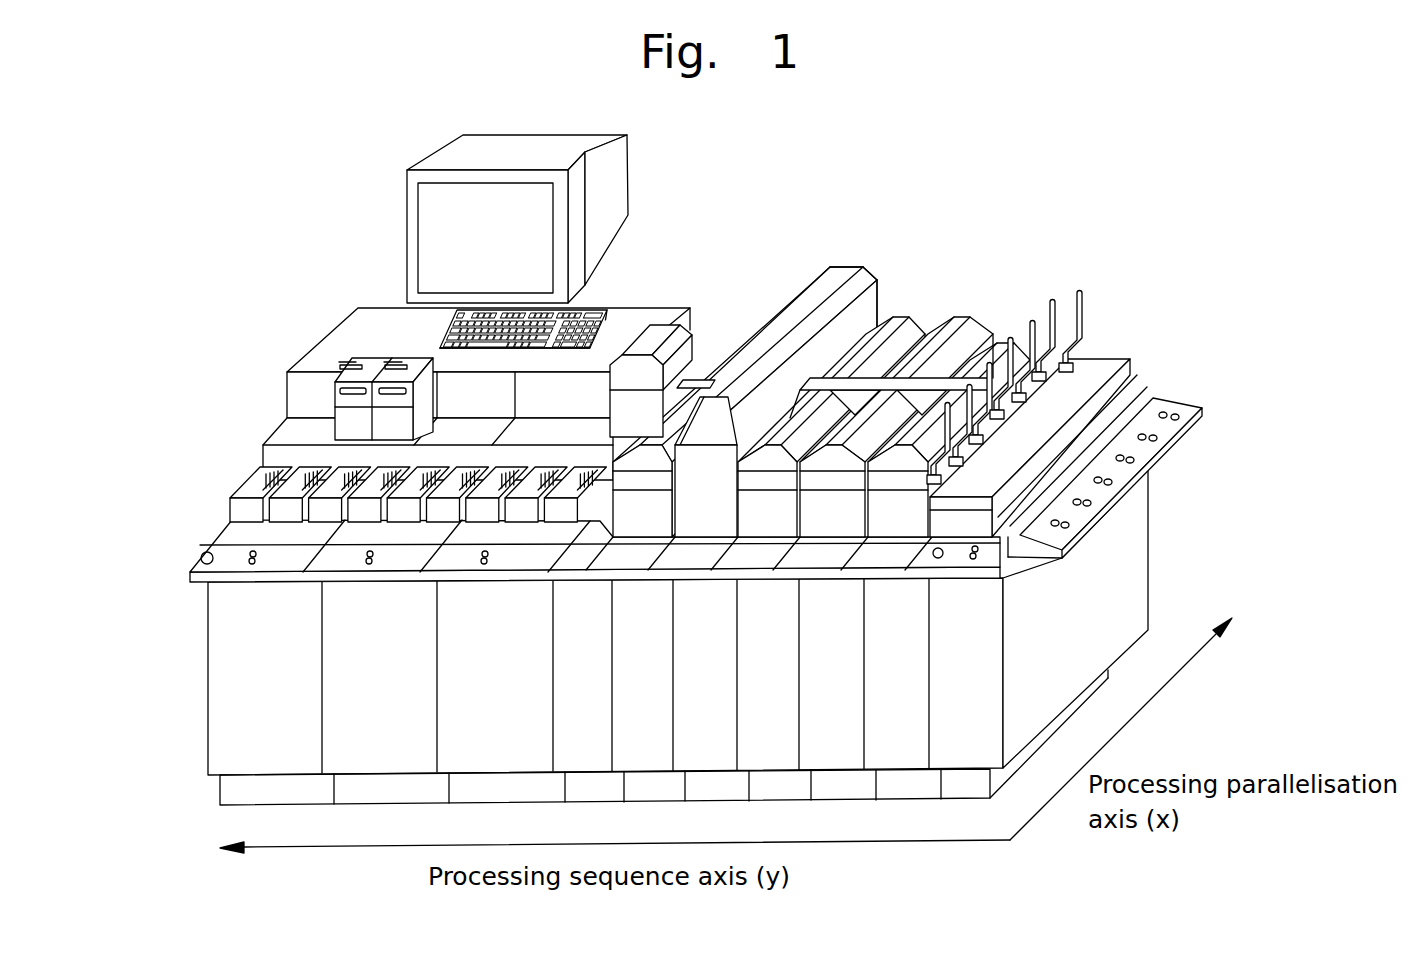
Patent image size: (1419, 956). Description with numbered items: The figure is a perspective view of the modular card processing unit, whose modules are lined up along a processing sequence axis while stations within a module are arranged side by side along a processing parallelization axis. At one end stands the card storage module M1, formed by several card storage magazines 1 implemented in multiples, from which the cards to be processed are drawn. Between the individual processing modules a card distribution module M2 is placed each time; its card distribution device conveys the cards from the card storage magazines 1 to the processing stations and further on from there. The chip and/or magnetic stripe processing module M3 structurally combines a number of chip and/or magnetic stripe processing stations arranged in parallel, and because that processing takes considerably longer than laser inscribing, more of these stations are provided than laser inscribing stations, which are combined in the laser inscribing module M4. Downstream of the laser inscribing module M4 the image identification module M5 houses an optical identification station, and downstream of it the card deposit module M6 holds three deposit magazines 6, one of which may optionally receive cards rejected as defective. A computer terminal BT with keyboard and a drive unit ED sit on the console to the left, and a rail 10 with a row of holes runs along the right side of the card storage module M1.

The card storage magazine 1 is at (1082, 325).
The side rail with holes 10 is at (1107, 381).
The deposit magazine 6 is at (418, 496).
The card storage module M1 is at (1030, 450).
The card distribution module M2 is at (821, 402).
The chip and/or magnetic stripe processing module M3 is at (896, 427).
The laser inscribing module M4 is at (706, 458).
The image identification module M5 is at (651, 381).
The card deposit module M6 is at (483, 533).
The computer display terminal BT is at (517, 219).
The disk drive unit ED is at (384, 399).